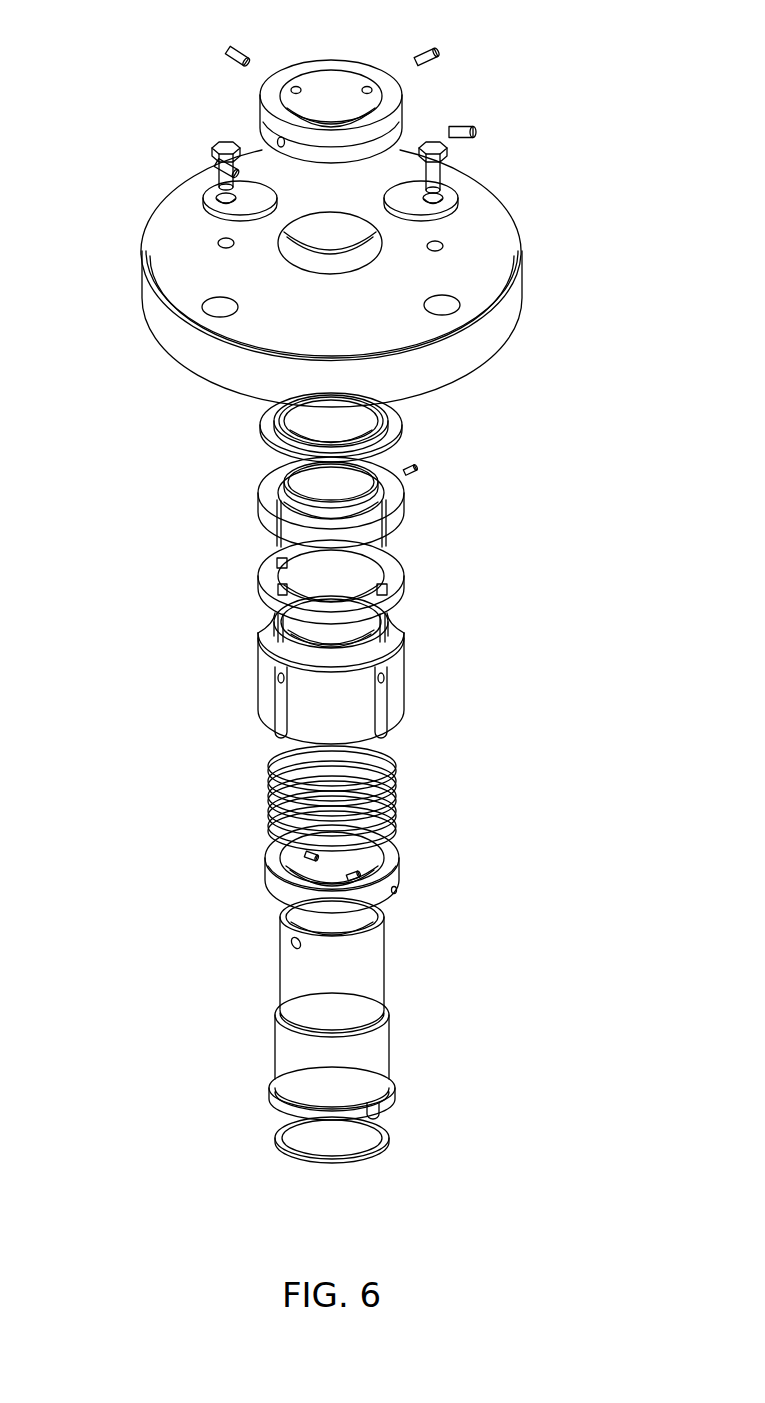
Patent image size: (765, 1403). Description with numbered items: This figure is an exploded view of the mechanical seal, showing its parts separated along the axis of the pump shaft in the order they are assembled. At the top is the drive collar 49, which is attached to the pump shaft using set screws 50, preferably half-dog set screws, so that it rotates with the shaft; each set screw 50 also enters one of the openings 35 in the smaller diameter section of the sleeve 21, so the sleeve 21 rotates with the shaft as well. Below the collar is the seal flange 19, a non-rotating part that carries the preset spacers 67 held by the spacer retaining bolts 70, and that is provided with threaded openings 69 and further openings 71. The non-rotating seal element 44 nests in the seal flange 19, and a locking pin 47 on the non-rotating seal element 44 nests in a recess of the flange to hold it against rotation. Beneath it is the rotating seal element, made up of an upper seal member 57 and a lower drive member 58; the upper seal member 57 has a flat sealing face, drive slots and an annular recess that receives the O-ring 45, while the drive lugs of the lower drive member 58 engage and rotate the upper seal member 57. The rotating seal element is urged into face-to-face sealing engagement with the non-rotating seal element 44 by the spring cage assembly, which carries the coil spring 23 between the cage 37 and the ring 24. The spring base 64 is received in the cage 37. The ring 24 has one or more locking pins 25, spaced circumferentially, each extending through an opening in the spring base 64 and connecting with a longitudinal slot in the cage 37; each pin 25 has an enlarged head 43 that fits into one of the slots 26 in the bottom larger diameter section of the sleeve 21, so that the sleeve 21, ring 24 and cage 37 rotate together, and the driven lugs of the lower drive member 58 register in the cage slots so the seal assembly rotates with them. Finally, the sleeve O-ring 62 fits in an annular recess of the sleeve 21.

The seal flange 19 is at (157, 338).
The sleeve 21 is at (278, 980).
The coil spring 23 is at (396, 762).
The ring 24 is at (396, 887).
The lug/locking pin 25 is at (307, 853).
The slots in sleeve 26 is at (392, 1093).
The opening 35 is at (298, 949).
The cage 37 is at (403, 698).
The head of pin 43 is at (327, 862).
The non-rotating seal element 44 is at (262, 425).
The O-ring 45 is at (363, 487).
The locking pin 47 is at (418, 473).
The drive collar 49 is at (333, 58).
The set screws 50 is at (243, 49).
The upper seal member 57 is at (400, 513).
The lower drive member 58 is at (403, 598).
The sleeve O-ring 62 is at (380, 1150).
The spring base 64 is at (265, 870).
The preset spacer 67 is at (210, 213).
The threaded opening 69 is at (218, 243).
The spacer retaining bolts 70 is at (223, 143).
The openings 71 is at (205, 302).